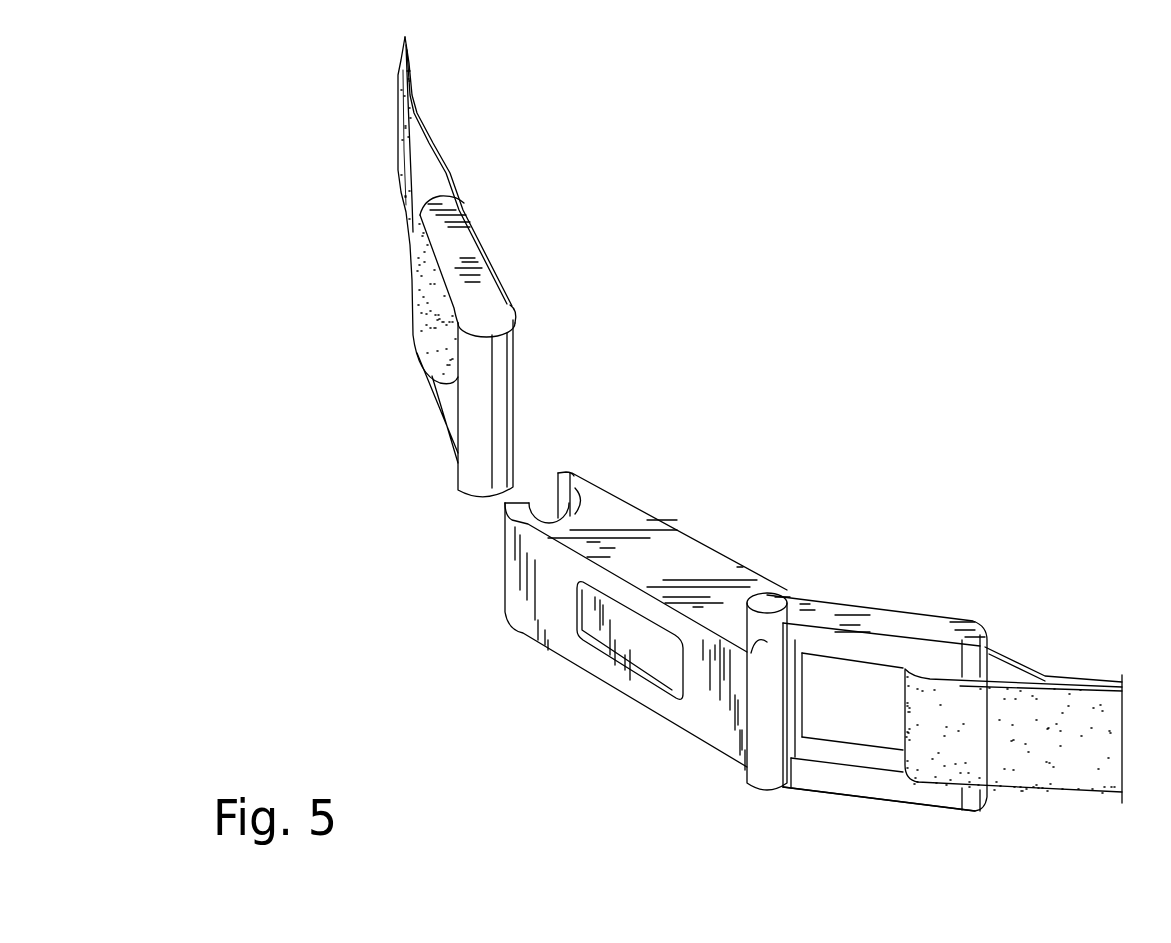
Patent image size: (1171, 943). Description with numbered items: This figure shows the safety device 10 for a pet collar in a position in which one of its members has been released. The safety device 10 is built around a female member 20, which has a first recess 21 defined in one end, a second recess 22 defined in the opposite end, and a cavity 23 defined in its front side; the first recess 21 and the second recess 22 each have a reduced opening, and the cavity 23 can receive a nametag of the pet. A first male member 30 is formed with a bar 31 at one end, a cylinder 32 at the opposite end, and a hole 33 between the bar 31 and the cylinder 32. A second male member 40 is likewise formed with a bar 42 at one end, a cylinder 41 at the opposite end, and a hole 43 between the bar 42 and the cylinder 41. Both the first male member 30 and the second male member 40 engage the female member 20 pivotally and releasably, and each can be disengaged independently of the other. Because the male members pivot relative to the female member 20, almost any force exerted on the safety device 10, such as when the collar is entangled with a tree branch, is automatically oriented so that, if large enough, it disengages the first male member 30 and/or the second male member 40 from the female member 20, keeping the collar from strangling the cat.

The safety device 10 is at (724, 503).
The female member 20 is at (678, 555).
The first recess 21 is at (757, 640).
The second recess 22 is at (575, 498).
The cavity 23 is at (632, 645).
The first male member 30 is at (885, 620).
The bar 31 is at (972, 675).
The cylinder 32 is at (790, 673).
The hole 33 is at (875, 727).
The second male member 40 is at (463, 273).
The cylinder 41 is at (482, 370).
The bar 42 is at (423, 248).
The hole 43 is at (445, 392).